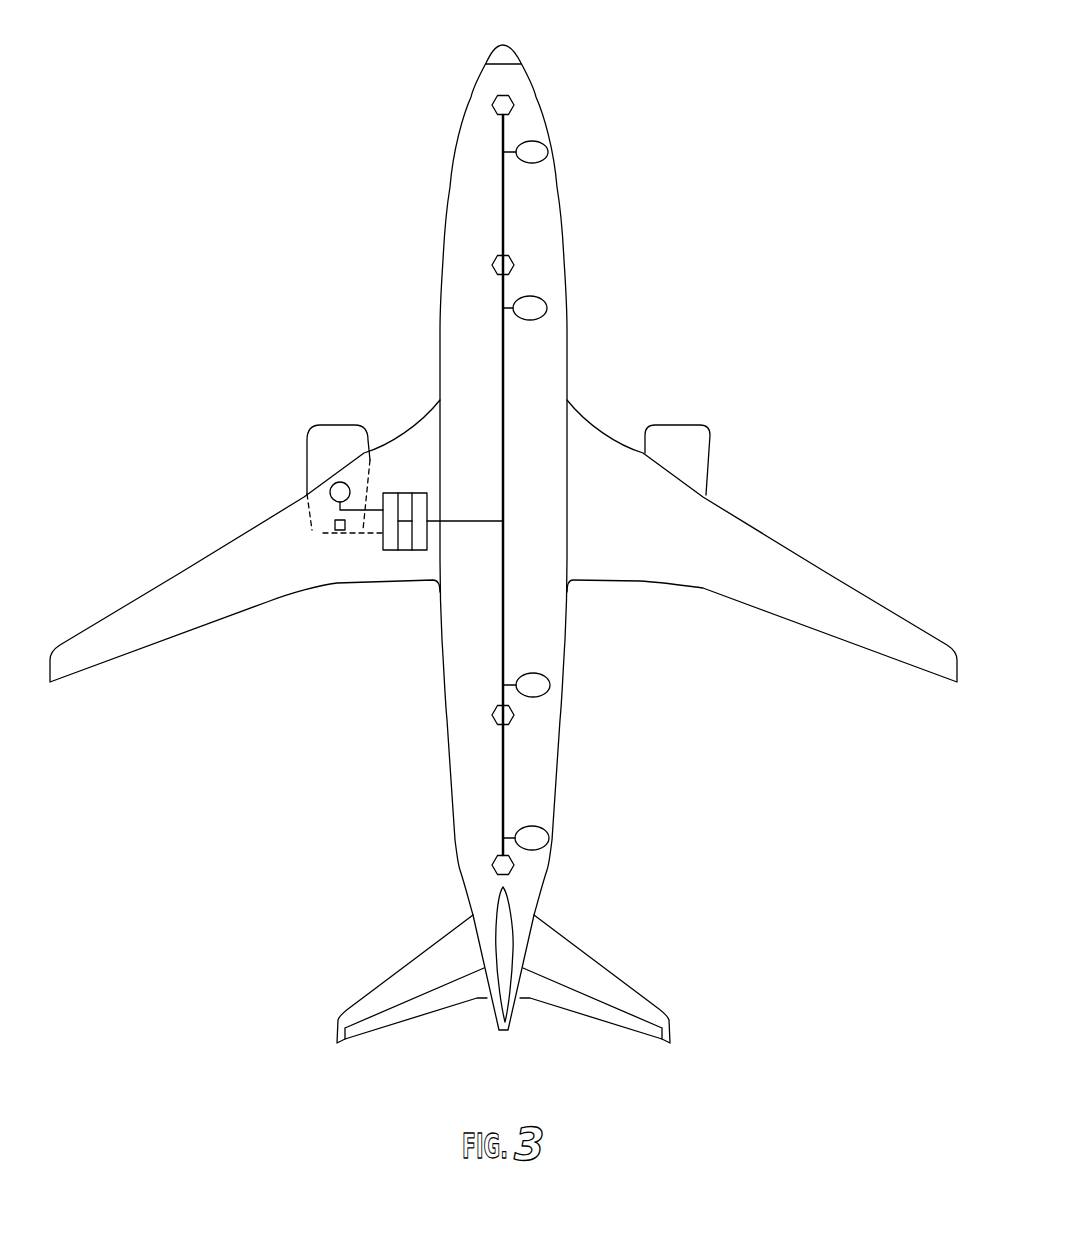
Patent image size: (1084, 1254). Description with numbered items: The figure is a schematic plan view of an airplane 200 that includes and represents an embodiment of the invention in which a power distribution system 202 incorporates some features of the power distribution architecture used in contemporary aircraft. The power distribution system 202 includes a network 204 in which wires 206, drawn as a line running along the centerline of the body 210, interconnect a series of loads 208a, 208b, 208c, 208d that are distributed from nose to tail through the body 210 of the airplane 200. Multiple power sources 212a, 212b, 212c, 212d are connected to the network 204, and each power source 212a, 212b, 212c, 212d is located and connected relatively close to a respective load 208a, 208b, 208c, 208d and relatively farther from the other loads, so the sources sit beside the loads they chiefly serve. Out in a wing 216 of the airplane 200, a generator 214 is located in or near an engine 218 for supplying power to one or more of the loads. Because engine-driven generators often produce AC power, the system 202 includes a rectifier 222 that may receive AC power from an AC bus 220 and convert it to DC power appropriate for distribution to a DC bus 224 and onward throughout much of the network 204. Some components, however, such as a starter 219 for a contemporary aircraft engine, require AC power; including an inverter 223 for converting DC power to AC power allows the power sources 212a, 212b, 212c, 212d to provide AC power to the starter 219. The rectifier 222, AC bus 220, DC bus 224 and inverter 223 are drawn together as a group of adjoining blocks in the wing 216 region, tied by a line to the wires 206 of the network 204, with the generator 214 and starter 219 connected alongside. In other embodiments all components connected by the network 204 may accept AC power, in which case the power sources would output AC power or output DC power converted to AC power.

The airplane 200 is at (503, 525).
The power distribution system 202 is at (466, 552).
The network 204 is at (499, 610).
The wires 206 is at (503, 407).
The load 208a is at (514, 105).
The load 208b is at (514, 268).
The load 208c is at (514, 717).
The load 208d is at (514, 867).
The body 210 is at (560, 656).
The power source 212a is at (540, 140).
The power source 212b is at (547, 308).
The power source 212c is at (551, 688).
The power source 212d is at (530, 826).
The generator 214 is at (330, 492).
The wing 216 is at (177, 637).
The engine 218 is at (369, 425).
The starter 219 is at (322, 534).
The AC bus 220 is at (390, 493).
The rectifier 222 is at (402, 478).
The inverter 223 is at (403, 493).
The DC bus 224 is at (423, 493).